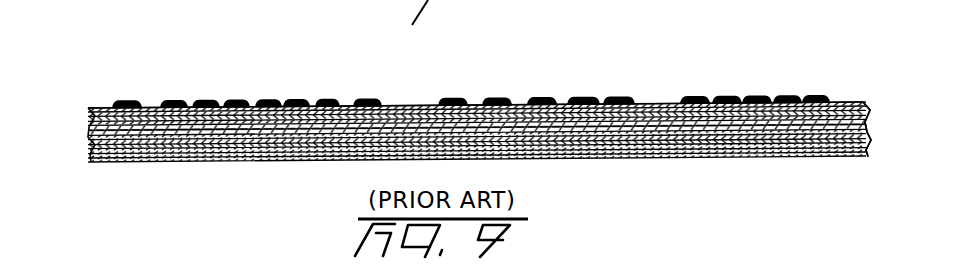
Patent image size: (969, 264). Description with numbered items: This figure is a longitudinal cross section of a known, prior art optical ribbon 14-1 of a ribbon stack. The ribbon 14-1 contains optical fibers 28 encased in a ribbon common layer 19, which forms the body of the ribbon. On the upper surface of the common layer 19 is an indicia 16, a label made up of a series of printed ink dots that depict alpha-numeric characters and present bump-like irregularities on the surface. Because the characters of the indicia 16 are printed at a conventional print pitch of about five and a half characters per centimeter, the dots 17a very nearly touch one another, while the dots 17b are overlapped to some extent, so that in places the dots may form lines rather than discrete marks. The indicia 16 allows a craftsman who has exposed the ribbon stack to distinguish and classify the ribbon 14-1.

The optical ribbon 14-1 is at (93, 95).
The indicia 16 is at (818, 57).
The dots 17a is at (325, 97).
The dots 17b is at (808, 93).
The ribbon common layer 19 is at (860, 101).
The optical fibers 28 is at (89, 134).